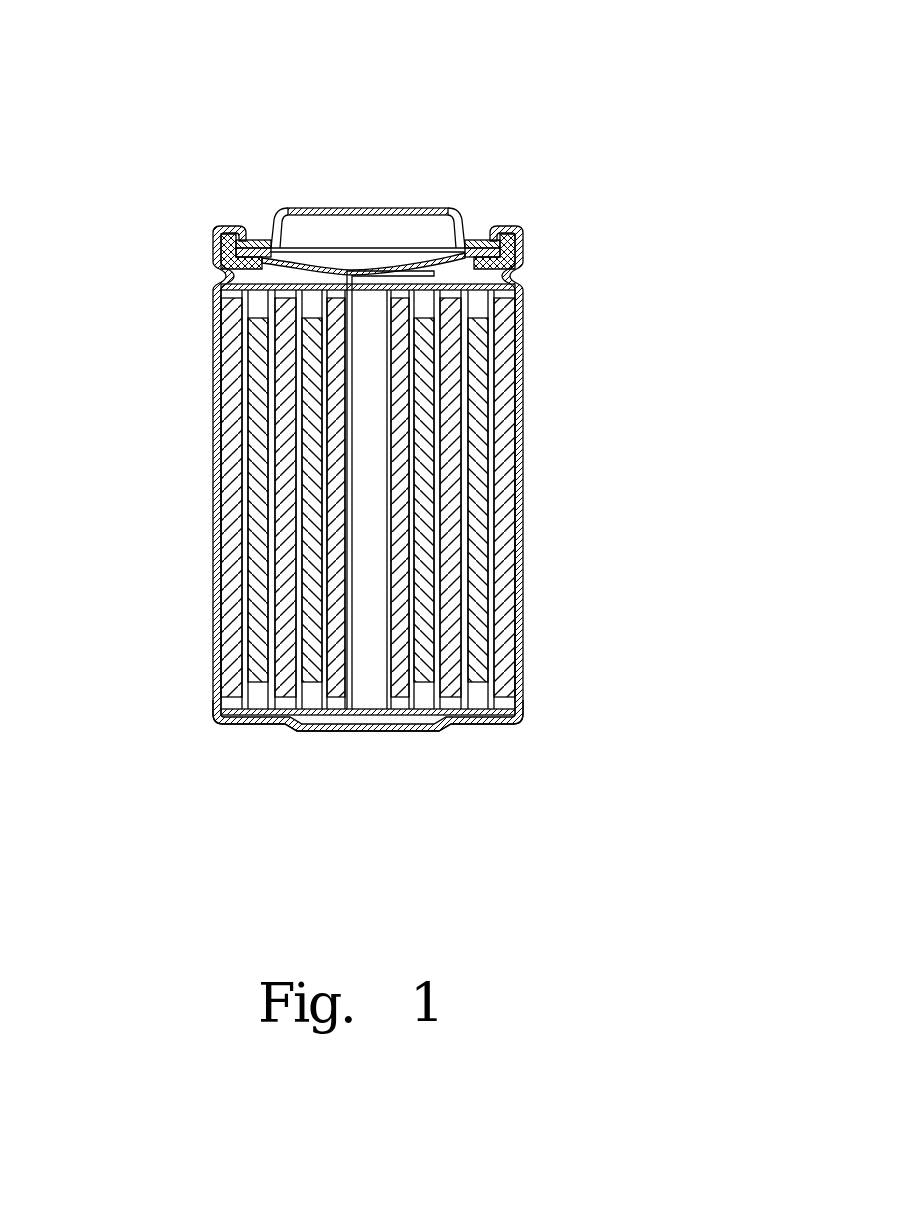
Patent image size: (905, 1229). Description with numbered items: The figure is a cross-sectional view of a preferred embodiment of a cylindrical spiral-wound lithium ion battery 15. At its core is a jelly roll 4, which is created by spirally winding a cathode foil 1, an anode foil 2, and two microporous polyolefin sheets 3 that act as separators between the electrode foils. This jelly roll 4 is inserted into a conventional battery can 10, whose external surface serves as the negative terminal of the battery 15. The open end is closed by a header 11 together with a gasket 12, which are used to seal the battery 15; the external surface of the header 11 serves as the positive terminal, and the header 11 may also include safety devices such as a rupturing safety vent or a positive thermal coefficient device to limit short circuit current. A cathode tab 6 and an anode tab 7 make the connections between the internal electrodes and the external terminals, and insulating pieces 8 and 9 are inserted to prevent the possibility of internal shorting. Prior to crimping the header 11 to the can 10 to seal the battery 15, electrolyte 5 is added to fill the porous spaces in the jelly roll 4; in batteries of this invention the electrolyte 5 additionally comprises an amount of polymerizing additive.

The cathode foil 1 is at (476, 569).
The anode foil 2 is at (236, 574).
The microporous polyolefin sheets 3 is at (245, 503).
The jelly roll 4 is at (214, 288).
The electrolyte 5 is at (445, 500).
The cathode tab 6 is at (343, 271).
The anode tab 7 is at (309, 728).
The insulating piece 8 is at (266, 279).
The insulating piece 9 is at (499, 725).
The battery can 10 is at (524, 380).
The header 11 is at (340, 207).
The gasket 12 is at (519, 237).
The battery 15 is at (492, 120).